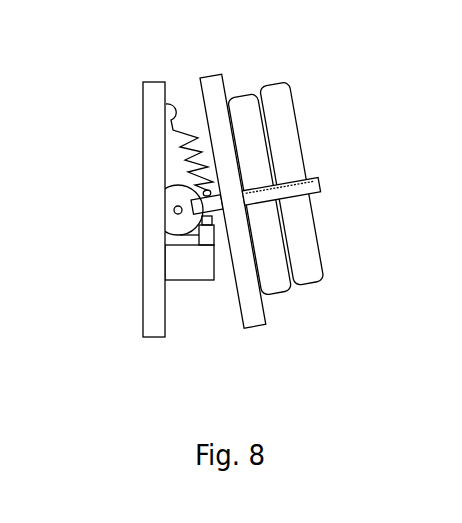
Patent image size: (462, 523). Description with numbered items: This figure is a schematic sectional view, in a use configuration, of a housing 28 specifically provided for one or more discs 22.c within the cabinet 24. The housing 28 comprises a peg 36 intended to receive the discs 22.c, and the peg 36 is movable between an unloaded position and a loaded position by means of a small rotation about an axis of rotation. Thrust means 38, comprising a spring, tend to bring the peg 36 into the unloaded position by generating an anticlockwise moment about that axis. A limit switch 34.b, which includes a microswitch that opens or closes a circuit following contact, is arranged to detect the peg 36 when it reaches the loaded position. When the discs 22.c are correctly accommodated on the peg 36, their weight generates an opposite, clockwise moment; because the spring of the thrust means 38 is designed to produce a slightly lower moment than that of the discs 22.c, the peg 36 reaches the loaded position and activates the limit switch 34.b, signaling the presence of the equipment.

The housing 28 is at (356, 98).
The cabinet 24 is at (142, 289).
The limit switch sensor 34.b is at (175, 234).
The thrust means 38 is at (178, 143).
The peg 36 is at (322, 189).
The discs 22.c is at (307, 267).